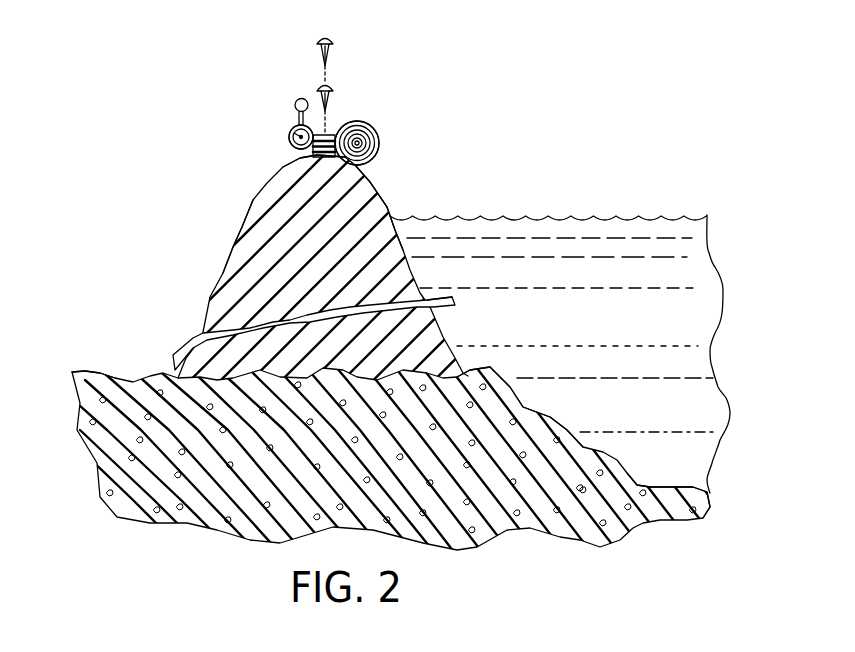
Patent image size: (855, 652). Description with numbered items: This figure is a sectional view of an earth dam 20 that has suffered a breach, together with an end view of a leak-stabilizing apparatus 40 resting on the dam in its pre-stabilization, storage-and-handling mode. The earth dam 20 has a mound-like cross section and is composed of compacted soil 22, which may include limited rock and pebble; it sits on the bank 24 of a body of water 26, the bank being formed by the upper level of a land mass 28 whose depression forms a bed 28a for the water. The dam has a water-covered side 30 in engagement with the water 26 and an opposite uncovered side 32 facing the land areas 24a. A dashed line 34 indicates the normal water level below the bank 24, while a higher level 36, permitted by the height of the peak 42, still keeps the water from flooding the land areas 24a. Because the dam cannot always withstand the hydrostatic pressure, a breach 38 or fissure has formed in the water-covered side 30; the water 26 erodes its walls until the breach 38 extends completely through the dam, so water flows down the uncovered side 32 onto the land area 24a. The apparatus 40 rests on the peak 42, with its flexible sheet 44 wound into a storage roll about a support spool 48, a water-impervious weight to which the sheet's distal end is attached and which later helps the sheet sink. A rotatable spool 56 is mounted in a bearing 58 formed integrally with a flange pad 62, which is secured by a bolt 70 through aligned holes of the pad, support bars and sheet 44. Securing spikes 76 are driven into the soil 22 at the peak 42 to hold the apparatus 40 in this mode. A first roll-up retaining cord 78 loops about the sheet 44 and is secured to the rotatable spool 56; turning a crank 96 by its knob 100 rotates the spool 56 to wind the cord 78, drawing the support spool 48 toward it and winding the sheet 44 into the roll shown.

The earth dam 20 is at (386, 181).
The compacted soil 22 is at (232, 275).
The bank 24 is at (480, 370).
The land areas 24a is at (72, 372).
The water 26 is at (173, 362).
The land mass 28 is at (107, 443).
The bed 28a is at (675, 487).
The water-covered side 30 is at (391, 210).
The uncovered side 32 is at (237, 240).
The dashed line 34 is at (693, 377).
The level 36 is at (673, 216).
The breach 38 is at (432, 296).
The apparatus 40 is at (416, 95).
The peak 42 is at (298, 153).
The sheet 44 is at (383, 145).
The support spool 48 is at (375, 133).
The rotatable spool 56 is at (289, 134).
The bearing 58 is at (291, 126).
The flange pad 62 is at (328, 134).
The bolt 70 is at (329, 85).
The securing spikes 76 is at (329, 40).
The first roll-up retaining cord 78 is at (349, 125).
The crank 96 is at (288, 116).
The knob 100 is at (298, 99).